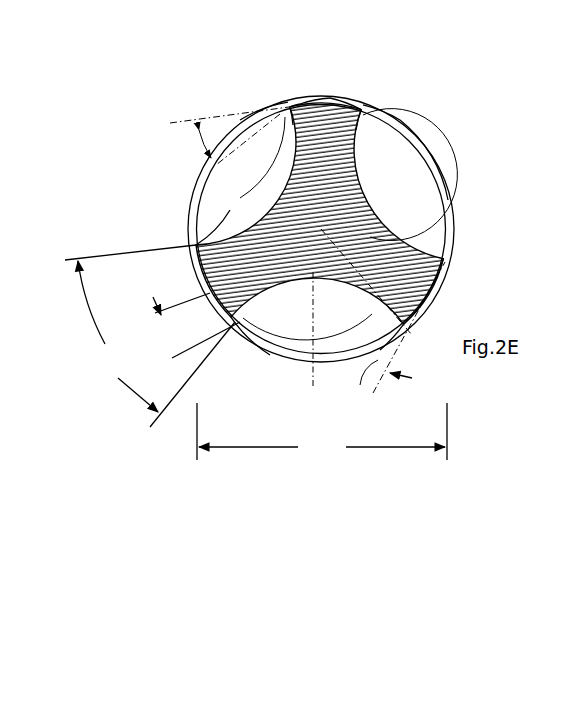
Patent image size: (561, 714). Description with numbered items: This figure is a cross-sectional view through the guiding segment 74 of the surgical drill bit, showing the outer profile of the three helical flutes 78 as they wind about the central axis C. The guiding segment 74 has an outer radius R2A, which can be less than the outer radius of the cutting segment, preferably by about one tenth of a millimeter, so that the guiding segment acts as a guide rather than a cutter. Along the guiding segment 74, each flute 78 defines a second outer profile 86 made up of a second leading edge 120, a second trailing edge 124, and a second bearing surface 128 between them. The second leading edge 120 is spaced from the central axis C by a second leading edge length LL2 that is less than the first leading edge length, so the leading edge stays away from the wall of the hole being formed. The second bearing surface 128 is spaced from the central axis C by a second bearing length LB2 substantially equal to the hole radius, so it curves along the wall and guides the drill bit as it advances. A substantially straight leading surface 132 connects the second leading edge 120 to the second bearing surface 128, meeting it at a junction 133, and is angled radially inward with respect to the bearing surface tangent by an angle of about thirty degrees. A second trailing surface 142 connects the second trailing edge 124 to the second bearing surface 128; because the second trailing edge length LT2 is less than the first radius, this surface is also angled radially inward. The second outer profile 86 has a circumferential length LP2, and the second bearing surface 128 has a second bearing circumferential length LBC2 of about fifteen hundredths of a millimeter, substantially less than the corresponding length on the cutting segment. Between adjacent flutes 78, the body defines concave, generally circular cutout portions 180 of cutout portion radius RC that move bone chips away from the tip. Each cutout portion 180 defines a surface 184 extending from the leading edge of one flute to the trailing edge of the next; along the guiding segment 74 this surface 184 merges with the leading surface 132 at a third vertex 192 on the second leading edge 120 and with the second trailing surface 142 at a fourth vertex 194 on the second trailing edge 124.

The guiding segment 74 is at (236, 86).
The helical flutes 78 is at (402, 144).
The second outer profile 86 is at (356, 88).
The second leading edge 120 is at (255, 113).
The second trailing edge 124 is at (389, 113).
The second bearing surface 128 is at (312, 100).
The leading surface 132 is at (288, 107).
The junction 133 is at (294, 103).
The second trailing surface 142 is at (366, 105).
The cutout portions 180 is at (220, 216).
The surface 184 is at (237, 200).
The third vertex 192 is at (252, 340).
The fourth vertex 194 is at (413, 331).
The central axis C is at (410, 210).
The cutout portion radius RC is at (311, 289).
The second trailing edge length LT2 is at (311, 340).
The second leading edge length LL2 is at (445, 255).
The second bearing length LB2 is at (425, 268).
The second outer profile circumferential length LP2 is at (150, 336).
The second bearing circumferential length LBC2 is at (188, 348).
The outer radius of the guiding segment R2A is at (322, 431).